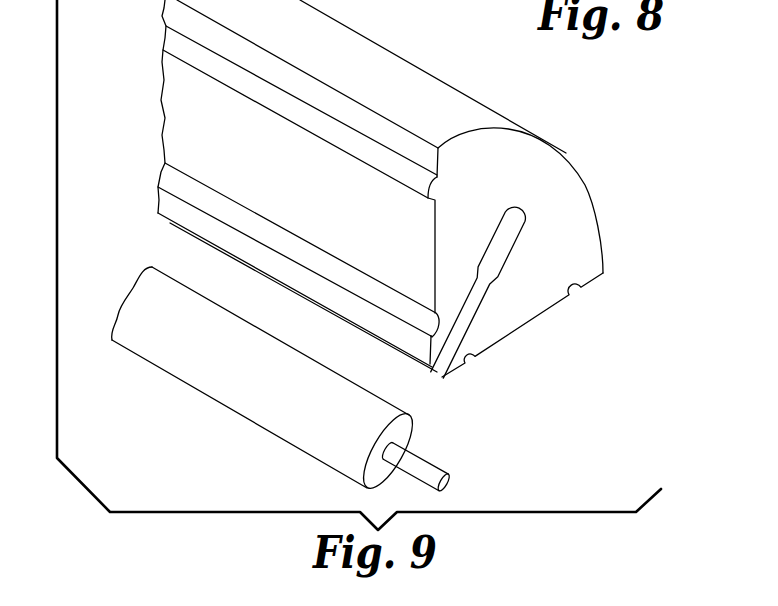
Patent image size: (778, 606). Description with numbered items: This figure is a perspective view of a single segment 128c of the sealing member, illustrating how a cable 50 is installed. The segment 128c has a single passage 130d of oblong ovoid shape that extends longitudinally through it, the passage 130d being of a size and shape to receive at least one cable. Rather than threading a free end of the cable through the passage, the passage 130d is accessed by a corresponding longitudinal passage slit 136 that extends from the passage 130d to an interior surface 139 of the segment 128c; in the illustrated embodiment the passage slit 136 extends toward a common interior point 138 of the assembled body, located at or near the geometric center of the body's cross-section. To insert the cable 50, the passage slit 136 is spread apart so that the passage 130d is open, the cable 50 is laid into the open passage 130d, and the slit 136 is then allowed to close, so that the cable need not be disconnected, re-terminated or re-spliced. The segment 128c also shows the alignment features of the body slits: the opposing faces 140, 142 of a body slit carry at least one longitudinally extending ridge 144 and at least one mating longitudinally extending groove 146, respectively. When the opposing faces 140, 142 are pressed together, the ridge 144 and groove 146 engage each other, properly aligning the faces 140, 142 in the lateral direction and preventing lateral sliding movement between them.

The cable 50 is at (137, 302).
The segment 128c is at (560, 165).
The passage 130d is at (508, 240).
The passage slit 136 is at (468, 322).
The interior point 138 is at (412, 407).
The interior surface 139 is at (184, 126).
The opposing face 140 is at (402, 142).
The opposing face 142 is at (553, 307).
The ridge 144 is at (166, 37).
The groove 146 is at (176, 177).